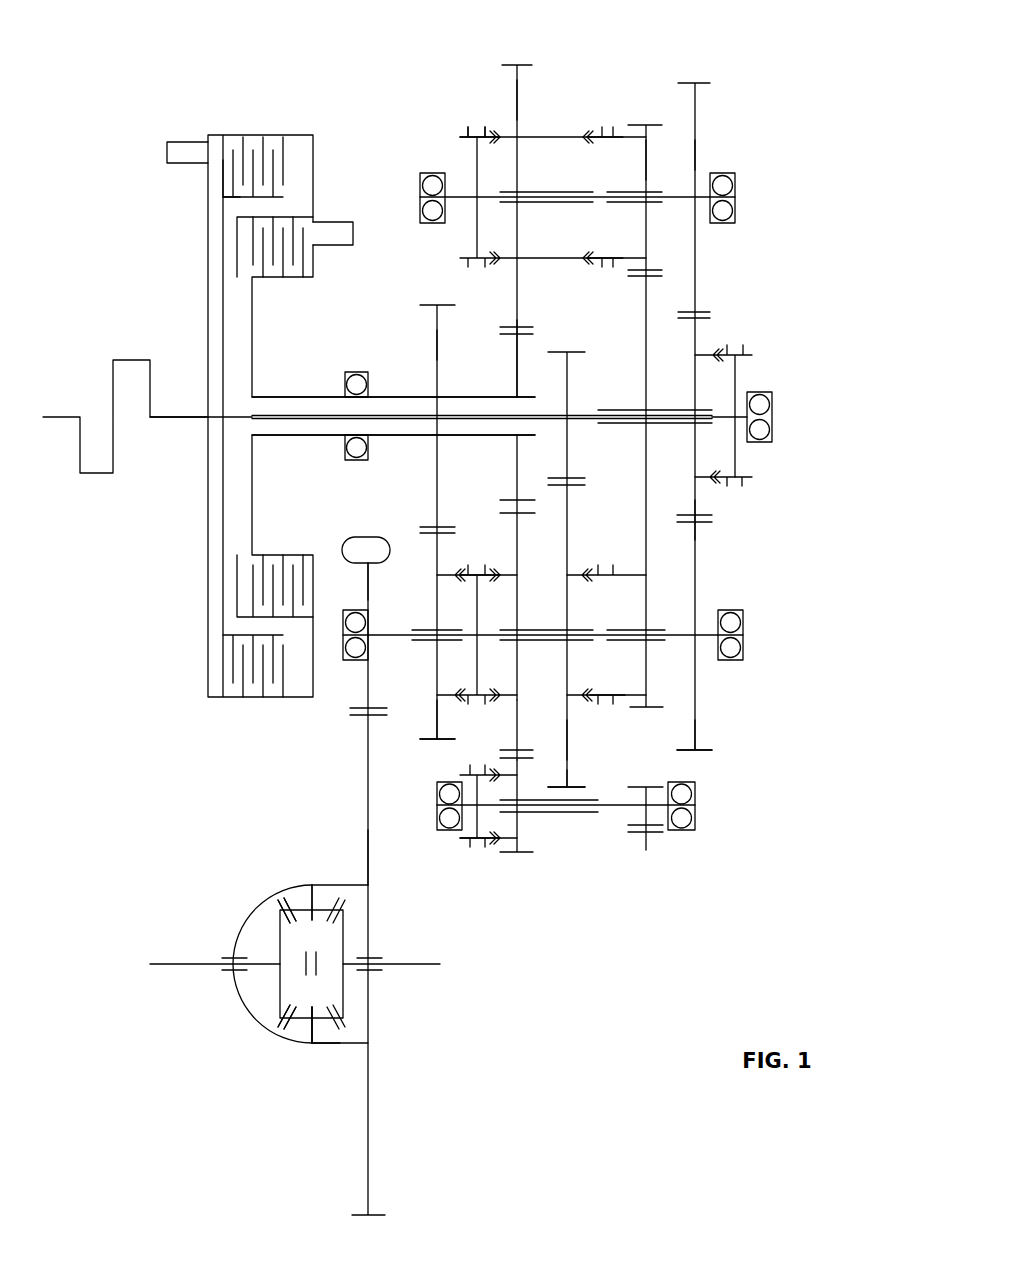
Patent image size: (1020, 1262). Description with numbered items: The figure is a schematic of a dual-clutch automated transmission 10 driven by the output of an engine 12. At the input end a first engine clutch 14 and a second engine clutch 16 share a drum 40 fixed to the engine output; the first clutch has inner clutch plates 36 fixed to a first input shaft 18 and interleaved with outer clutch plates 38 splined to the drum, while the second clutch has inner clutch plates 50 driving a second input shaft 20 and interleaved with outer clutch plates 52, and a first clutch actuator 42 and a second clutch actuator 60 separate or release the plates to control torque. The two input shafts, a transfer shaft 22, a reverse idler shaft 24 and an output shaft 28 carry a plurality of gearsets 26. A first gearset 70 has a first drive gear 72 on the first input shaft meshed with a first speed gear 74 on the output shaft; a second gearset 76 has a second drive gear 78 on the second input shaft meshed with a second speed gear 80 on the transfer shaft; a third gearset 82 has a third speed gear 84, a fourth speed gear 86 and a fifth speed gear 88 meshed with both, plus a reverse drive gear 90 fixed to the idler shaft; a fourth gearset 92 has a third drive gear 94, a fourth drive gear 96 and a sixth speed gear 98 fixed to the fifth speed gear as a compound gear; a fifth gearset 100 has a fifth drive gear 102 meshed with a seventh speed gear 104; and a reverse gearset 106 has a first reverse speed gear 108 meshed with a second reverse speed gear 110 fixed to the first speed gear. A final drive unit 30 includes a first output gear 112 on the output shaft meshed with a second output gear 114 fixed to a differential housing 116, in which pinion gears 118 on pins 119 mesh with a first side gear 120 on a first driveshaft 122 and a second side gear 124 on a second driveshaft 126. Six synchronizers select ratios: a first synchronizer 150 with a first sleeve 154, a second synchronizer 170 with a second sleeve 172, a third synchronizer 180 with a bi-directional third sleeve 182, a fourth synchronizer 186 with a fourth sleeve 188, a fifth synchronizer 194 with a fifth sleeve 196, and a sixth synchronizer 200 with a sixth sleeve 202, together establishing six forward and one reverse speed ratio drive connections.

The dual-clutch automated transmission 10 is at (826, 68).
The engine 12 is at (57, 416).
The first engine clutch 14 is at (218, 130).
The second engine clutch 16 is at (302, 212).
The first input shaft 18 is at (252, 418).
The second input shaft 20 is at (287, 395).
The transfer shaft 22 is at (690, 197).
The reverse idler shaft 24 is at (618, 807).
The plurality of gearsets 26 is at (732, 525).
The output shaft 28 is at (385, 640).
The final drive unit 30 is at (367, 533).
The inner clutch plates 36 is at (233, 187).
The outer clutch plates 38 is at (248, 145).
The drum 40 is at (305, 135).
The first clutch actuator 42 is at (167, 153).
The inner clutch plates 50 is at (305, 268).
The outer clutch plates 52 is at (253, 237).
The second clutch actuator 60 is at (345, 238).
The first gearset 70 is at (567, 792).
The first drive gear 72 is at (568, 433).
The first speed gear 74 is at (567, 737).
The second gearset 76 is at (517, 58).
The second drive gear 78 is at (517, 375).
The second speed gear 80 is at (520, 92).
The third gearset 82 is at (641, 97).
The third speed gear 84 is at (648, 148).
The fourth speed gear 86 is at (647, 662).
The fifth speed gear 88 is at (648, 290).
The reverse drive gear 90 is at (648, 815).
The fourth gearset 92 is at (697, 75).
The third drive gear 94 is at (697, 152).
The fourth drive gear 96 is at (695, 733).
The sixth speed gear 98 is at (697, 333).
The fifth gearset 100 is at (437, 300).
The fifth drive gear 102 is at (437, 345).
The seventh speed gear 104 is at (437, 715).
The reverse gearset 106 is at (517, 858).
The first reverse speed gear 108 is at (517, 823).
The second reverse speed gear 110 is at (517, 718).
The first output gear 112 is at (368, 577).
The second output gear 114 is at (368, 838).
The differential housing 116 is at (327, 1043).
The pinion gears 118 is at (297, 893).
The pins 119 is at (327, 900).
The first side gear 120 is at (280, 942).
The first driveshaft 122 is at (167, 967).
The second side gear 124 is at (343, 938).
The second driveshaft 126 is at (407, 967).
The first synchronizer 150 is at (605, 570).
The first sleeve 154 is at (607, 703).
The second synchronizer 170 is at (607, 270).
The second sleeve 172 is at (605, 128).
The third synchronizer 180 is at (475, 540).
The third sleeve 182 is at (477, 572).
The fourth synchronizer 186 is at (473, 92).
The fourth sleeve 188 is at (470, 132).
The fifth synchronizer 194 is at (733, 487).
The fifth sleeve 196 is at (736, 353).
The sixth synchronizer 200 is at (477, 845).
The sixth sleeve 202 is at (478, 770).